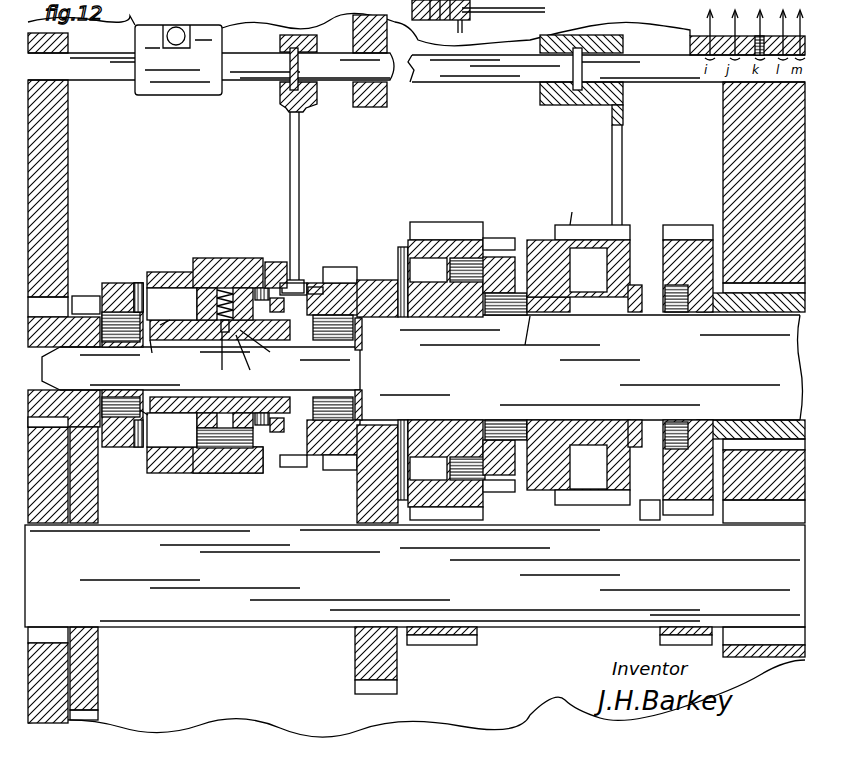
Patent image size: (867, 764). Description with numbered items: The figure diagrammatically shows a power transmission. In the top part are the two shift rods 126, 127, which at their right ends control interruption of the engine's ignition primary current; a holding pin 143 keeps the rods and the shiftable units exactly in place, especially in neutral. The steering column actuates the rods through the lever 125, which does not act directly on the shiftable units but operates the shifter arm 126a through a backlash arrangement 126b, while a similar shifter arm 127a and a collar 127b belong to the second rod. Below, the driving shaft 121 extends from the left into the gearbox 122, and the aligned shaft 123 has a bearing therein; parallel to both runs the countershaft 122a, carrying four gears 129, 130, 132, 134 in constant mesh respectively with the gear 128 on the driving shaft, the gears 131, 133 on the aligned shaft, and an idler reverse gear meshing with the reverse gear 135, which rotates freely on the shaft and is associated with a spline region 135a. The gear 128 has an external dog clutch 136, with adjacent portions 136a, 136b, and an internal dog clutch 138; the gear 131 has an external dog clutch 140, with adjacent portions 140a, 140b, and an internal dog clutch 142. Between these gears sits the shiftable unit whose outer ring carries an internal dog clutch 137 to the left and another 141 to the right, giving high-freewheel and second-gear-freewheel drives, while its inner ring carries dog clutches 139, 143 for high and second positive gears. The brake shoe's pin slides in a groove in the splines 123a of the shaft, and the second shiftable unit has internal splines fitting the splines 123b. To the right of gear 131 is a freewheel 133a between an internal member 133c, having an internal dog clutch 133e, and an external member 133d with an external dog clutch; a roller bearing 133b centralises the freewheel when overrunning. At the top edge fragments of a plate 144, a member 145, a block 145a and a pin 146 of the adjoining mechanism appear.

The driving shaft 121 is at (64, 361).
The gearbox 122 is at (60, 160).
The countershaft 122a is at (90, 525).
The aligned shaft 123 is at (608, 325).
The splines of shaft 123 123a is at (318, 342).
The splines of shaft 123 123b is at (548, 312).
The lever 125 is at (161, 58).
The shift rod 126 is at (105, 85).
The shifter arm 126a is at (296, 190).
The backlash arrangement 126b is at (323, 79).
The shift rod 127 is at (606, 77).
The shifter arm 127a is at (610, 141).
The collar 127b is at (626, 97).
The gear 128 is at (86, 296).
The gear 129 is at (98, 703).
The gear 130 is at (355, 660).
The gear 131 is at (380, 280).
The gear 132 is at (462, 638).
The gear 133 is at (468, 240).
The freewheel 133a is at (425, 258).
The roller bearing 133b is at (466, 270).
The internal member 133c is at (410, 315).
The external member 133d is at (500, 238).
The internal dog clutch 133e is at (508, 293).
The gear 134 is at (660, 638).
The reverse gear 135 is at (688, 240).
The spline 135a is at (676, 312).
The external dog clutch 136 is at (120, 283).
The sleeve part 136a is at (138, 283).
The sleeve part 136b is at (135, 440).
The internal dog clutch 137 is at (172, 272).
The internal dog clutch 138 is at (155, 416).
The dog clutch 139 is at (190, 316).
The external dog clutch 140 is at (338, 267).
The sleeve lip 140a is at (312, 287).
The sleeve part 140b is at (330, 470).
The internal dog clutch 141 is at (285, 283).
The internal dog clutch 142 is at (277, 356).
The dog clutch 143 is at (760, 36).
The plate 144 is at (517, 6).
The fragment 145 is at (415, 10).
The block 145a is at (441, 19).
The pin 146 is at (464, 28).